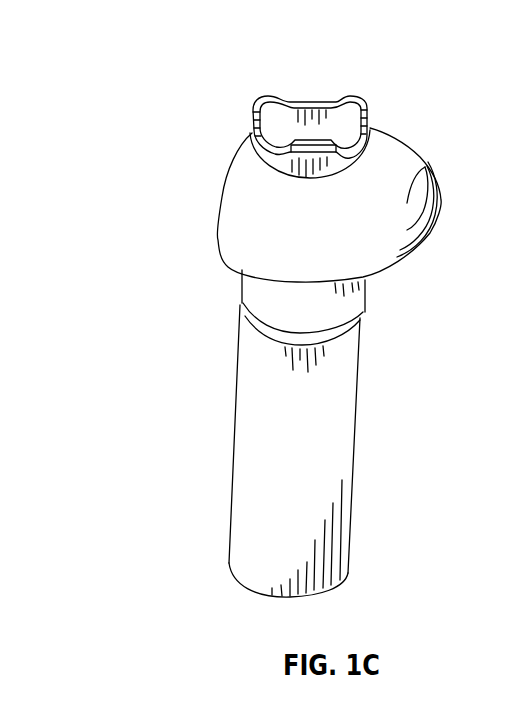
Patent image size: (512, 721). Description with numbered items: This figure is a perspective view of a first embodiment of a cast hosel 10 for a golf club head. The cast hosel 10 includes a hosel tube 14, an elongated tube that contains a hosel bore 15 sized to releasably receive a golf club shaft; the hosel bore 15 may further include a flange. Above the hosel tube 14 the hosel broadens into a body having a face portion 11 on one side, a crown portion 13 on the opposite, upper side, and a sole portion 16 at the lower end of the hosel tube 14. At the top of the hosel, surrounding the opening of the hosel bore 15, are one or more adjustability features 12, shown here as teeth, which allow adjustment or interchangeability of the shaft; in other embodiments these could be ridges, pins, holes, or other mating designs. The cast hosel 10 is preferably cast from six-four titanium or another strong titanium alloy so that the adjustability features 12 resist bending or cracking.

The cast hosel 10 is at (169, 63).
The face portion 11 is at (222, 198).
The adjustability features 12 is at (265, 99).
The crown portion 13 is at (423, 162).
The hosel tube 14 is at (253, 443).
The hosel bore 15 is at (295, 117).
The sole portion 16 is at (323, 592).